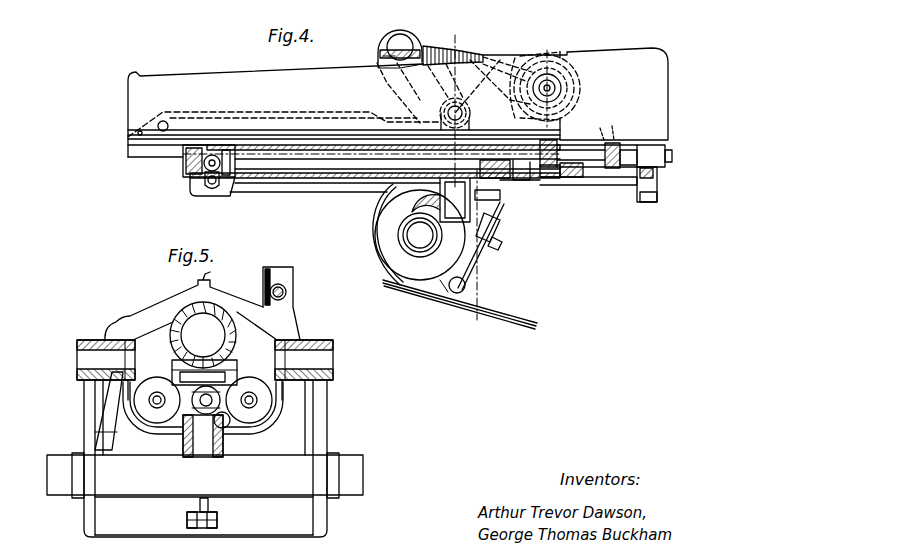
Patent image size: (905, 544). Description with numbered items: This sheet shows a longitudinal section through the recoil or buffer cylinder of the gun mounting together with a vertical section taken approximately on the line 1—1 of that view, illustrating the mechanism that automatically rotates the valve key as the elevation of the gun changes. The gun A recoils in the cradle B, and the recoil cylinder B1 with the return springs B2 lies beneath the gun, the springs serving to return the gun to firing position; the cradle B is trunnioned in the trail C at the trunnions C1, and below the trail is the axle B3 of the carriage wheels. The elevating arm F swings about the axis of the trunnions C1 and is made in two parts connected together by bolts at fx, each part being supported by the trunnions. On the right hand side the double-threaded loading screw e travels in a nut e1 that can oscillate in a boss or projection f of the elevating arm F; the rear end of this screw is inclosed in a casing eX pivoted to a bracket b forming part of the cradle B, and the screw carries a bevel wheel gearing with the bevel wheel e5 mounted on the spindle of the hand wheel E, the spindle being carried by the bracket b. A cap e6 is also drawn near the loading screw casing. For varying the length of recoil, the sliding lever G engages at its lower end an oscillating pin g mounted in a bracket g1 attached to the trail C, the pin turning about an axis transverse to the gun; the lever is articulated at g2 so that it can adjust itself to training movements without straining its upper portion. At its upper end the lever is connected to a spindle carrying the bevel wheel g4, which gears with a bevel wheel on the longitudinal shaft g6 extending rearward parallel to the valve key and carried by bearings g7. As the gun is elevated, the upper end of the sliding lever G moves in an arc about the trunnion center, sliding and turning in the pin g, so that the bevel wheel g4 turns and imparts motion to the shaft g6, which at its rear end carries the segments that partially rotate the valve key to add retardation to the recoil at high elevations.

In FIG. 4, the gun A is at (344, 110).
In FIG. 5, the gun A is at (196, 328).
In FIG. 4, the cradle B is at (555, 198).
In FIG. 5, the cradle B is at (160, 438).
In FIG. 4, the recoil cylinder B1 is at (304, 183).
In FIG. 5, the recoil cylinder B1 is at (227, 372).
In FIG. 4, the return springs B2 is at (250, 180).
In FIG. 5, the return springs B2 is at (100, 372).
In FIG. 4, the axle of the carriage-wheels B3 is at (413, 218).
In FIG. 5, the axle of the carriage-wheels B3 is at (205, 435).
In FIG. 4, the trail C is at (460, 304).
In FIG. 5, the trail C is at (205, 458).
In FIG. 4, the trunnions C1 is at (490, 60).
In FIG. 5, the trunnions C1 is at (108, 354).
In FIG. 4, the hand wheel for quick or loading movement E is at (575, 94).
In FIG. 5, the elevating arm F is at (124, 328).
In FIG. 4, the sliding lever G is at (481, 255).
In FIG. 5, the sliding lever G is at (187, 515).
In FIG. 4, the bracket b is at (470, 112).
In FIG. 4, the loading screw e is at (445, 45).
In FIG. 5, the loading screw e is at (286, 292).
In FIG. 4, the nut e1 is at (438, 46).
In FIG. 5, the nut e1 is at (293, 282).
In FIG. 4, the bevel wheel e5 is at (590, 58).
In FIG. 4, the cap e6 is at (381, 33).
In FIG. 4, the casing eX is at (568, 48).
In FIG. 4, the boss or projection f is at (395, 20).
In FIG. 5, the boss or projection f is at (272, 266).
In FIG. 4, the bolts fx is at (383, 56).
In FIG. 5, the bolts fx is at (206, 272).
In FIG. 4, the oscillating pin g is at (455, 292).
In FIG. 5, the oscillating pin g is at (210, 512).
In FIG. 4, the bracket g1 is at (433, 285).
In FIG. 5, the bracket g1 is at (187, 521).
In FIG. 4, the articulation g2 is at (498, 240).
In FIG. 4, the bevel wheel g4 is at (642, 200).
In FIG. 4, the longitudinal shaft g6 is at (598, 183).
In FIG. 4, the bearings g7 is at (538, 200).
In FIG. 4, the section line 1 is at (476, 65).